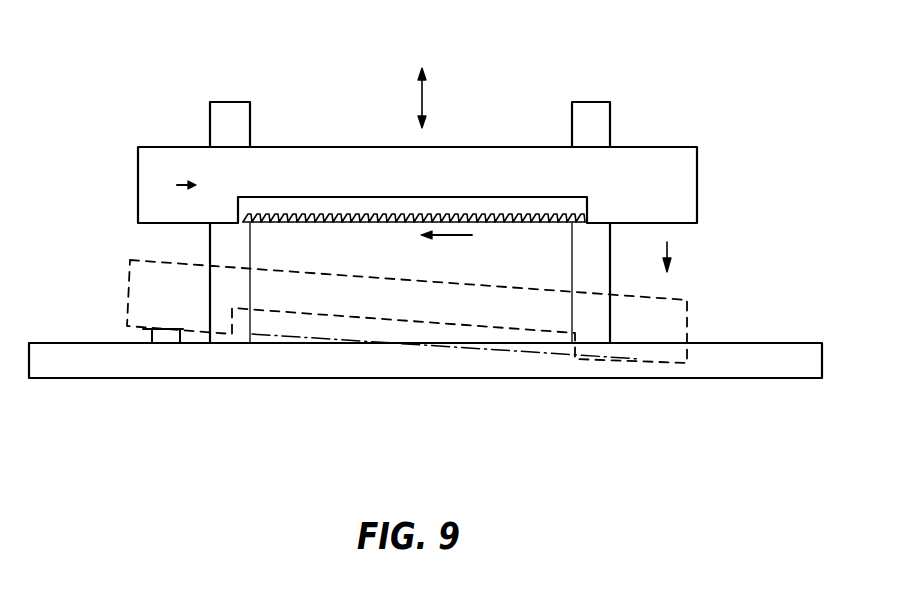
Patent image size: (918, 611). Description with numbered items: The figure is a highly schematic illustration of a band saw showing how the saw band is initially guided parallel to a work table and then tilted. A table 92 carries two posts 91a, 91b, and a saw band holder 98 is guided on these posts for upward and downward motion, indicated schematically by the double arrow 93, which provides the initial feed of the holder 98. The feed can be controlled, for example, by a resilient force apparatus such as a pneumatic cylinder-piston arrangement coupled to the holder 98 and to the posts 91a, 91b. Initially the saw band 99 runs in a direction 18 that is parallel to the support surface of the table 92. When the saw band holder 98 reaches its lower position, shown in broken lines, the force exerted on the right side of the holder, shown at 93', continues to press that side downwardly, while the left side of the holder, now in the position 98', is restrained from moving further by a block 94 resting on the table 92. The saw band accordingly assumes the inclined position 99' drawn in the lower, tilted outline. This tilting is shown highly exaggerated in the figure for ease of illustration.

The direction 18 is at (447, 241).
The post 91a is at (223, 102).
The post 91b is at (598, 100).
The table 92 is at (165, 370).
The double arrow 93 is at (392, 72).
The force 93' is at (717, 235).
The block 94 is at (150, 336).
The saw band holder 98 is at (436, 160).
The position of the saw band holder 98' is at (449, 311).
The saw band 99 is at (415, 211).
The saw band in tilted position 99' is at (446, 397).